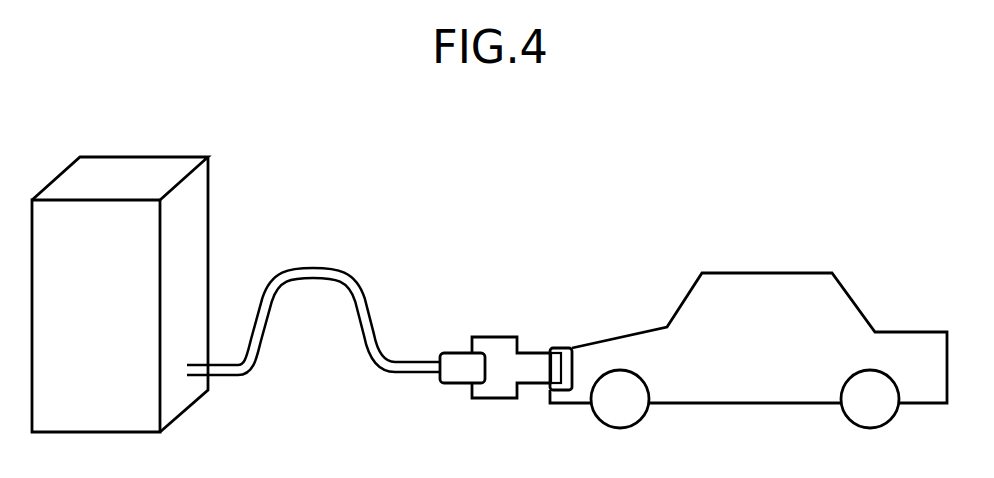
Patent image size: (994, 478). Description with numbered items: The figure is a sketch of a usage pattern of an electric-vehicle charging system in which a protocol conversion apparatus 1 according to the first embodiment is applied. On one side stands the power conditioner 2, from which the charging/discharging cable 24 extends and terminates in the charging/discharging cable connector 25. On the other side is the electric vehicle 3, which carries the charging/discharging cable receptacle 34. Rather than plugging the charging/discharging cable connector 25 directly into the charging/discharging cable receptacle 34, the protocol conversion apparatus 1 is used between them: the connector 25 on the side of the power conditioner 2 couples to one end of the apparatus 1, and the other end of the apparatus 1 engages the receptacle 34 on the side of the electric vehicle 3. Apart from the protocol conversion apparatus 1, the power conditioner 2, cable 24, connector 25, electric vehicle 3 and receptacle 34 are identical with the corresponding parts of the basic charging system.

The protocol conversion apparatus 1 is at (494, 337).
The power conditioner 2 is at (141, 157).
The electric vehicle 3 is at (764, 273).
The charging/discharging cable 24 is at (255, 362).
The charging/discharging cable connector 25 is at (457, 385).
The charging/discharging cable receptacle 34 is at (557, 348).